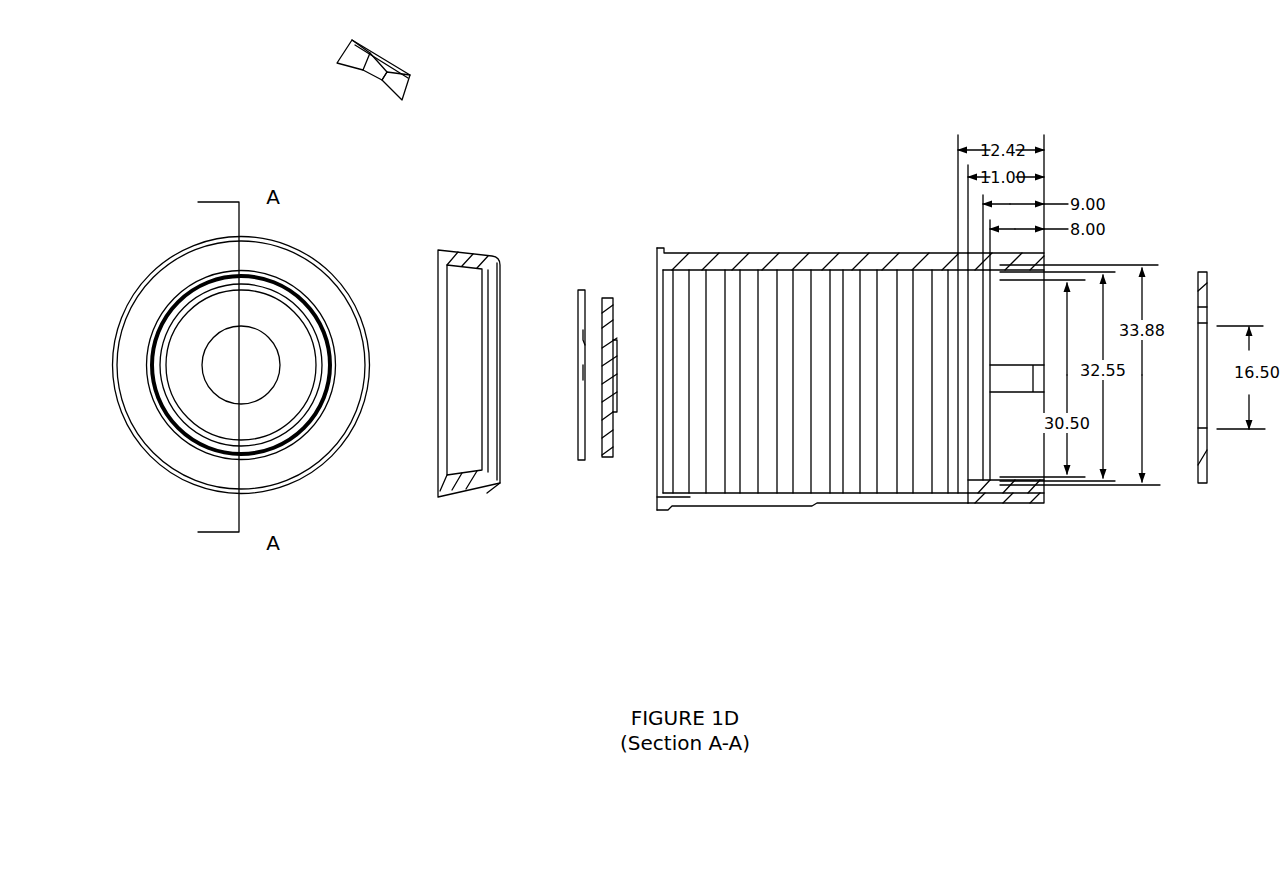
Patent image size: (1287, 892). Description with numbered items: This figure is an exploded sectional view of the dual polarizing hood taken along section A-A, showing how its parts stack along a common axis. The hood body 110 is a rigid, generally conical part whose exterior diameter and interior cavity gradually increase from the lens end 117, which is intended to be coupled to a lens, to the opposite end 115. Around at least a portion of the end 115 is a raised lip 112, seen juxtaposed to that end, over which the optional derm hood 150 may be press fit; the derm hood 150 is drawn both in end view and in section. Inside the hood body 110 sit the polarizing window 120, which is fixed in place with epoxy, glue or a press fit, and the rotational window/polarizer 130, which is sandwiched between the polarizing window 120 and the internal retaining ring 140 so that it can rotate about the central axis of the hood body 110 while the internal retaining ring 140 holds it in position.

The hood body 110 is at (875, 253).
The raised lip 112 is at (668, 514).
The end of hood body 115 is at (657, 497).
The lens end of hood body 117 is at (1044, 495).
The polarizing window 120 is at (1207, 272).
The rotational window/polarizer 130 is at (281, 403).
The internal retaining ring 140 is at (582, 290).
The derm hood 150 is at (327, 308).